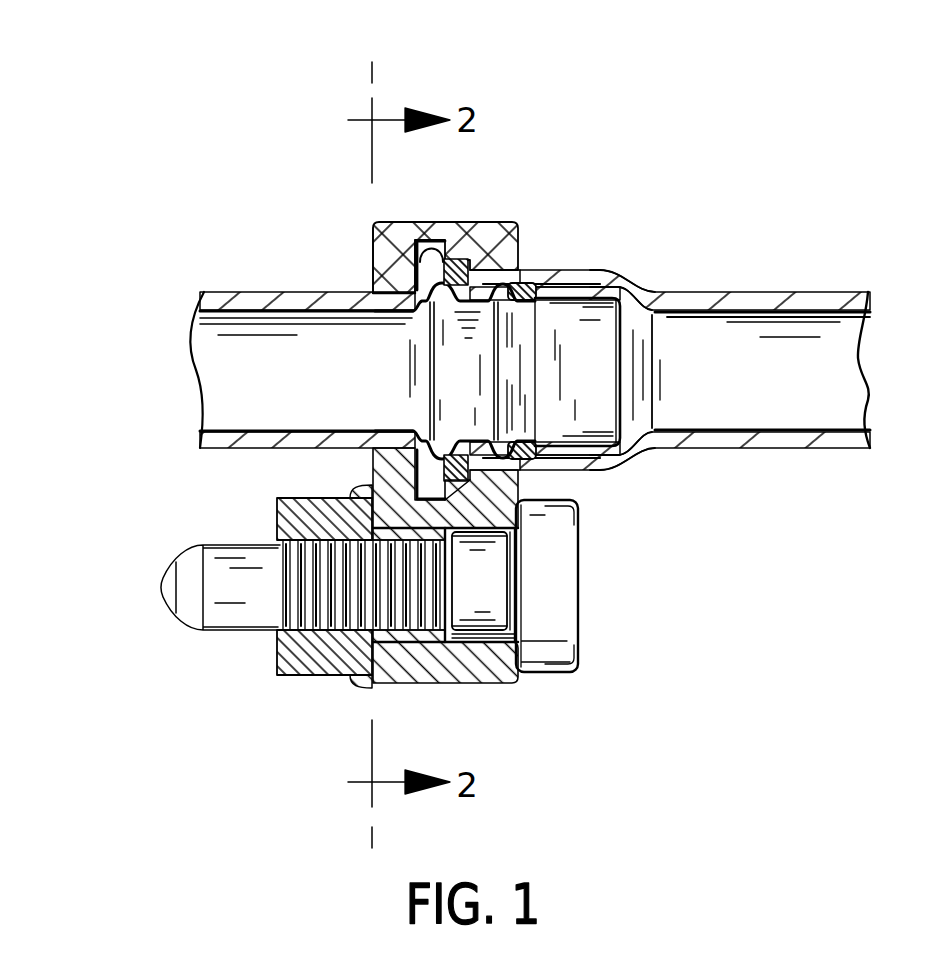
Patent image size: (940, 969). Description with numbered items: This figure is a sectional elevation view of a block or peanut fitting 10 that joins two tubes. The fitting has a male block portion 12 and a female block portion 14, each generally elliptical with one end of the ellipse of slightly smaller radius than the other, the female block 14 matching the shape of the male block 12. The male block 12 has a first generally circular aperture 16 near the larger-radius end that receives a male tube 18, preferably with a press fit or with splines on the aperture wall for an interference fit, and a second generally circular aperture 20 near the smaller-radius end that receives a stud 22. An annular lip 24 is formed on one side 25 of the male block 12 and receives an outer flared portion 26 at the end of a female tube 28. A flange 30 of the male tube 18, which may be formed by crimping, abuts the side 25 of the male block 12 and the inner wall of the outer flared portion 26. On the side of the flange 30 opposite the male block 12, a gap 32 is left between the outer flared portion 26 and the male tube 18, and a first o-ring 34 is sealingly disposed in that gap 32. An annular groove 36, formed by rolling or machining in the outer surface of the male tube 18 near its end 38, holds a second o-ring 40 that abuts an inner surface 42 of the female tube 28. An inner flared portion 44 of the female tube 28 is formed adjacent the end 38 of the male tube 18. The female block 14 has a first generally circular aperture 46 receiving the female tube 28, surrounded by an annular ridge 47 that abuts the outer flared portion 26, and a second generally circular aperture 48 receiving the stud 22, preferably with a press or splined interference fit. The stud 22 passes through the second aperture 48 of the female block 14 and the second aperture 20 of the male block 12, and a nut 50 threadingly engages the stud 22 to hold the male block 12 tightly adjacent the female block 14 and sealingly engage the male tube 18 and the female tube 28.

The block fitting 10 is at (600, 738).
The male block portion 12 is at (377, 265).
The female block portion 14 is at (545, 285).
The first aperture 16 is at (410, 318).
The male tube 18 is at (232, 298).
The second aperture 20 is at (407, 642).
The stud 22 is at (552, 617).
The annular lip 24 is at (433, 243).
The side 25 is at (373, 250).
The outer flared portion 26 is at (457, 252).
The female tube 28 is at (787, 297).
The flange 30 is at (415, 283).
The gap 32 is at (520, 262).
The first o-ring 34 is at (528, 282).
The annular groove 36 is at (550, 312).
The end 38 is at (623, 403).
The second o-ring 40 is at (533, 310).
The inner surface 42 is at (672, 317).
The inner flared portion 44 is at (635, 283).
The first aperture 46 is at (522, 462).
The annular ridge 47 is at (505, 512).
The second aperture 48 is at (483, 630).
The nut 50 is at (300, 672).